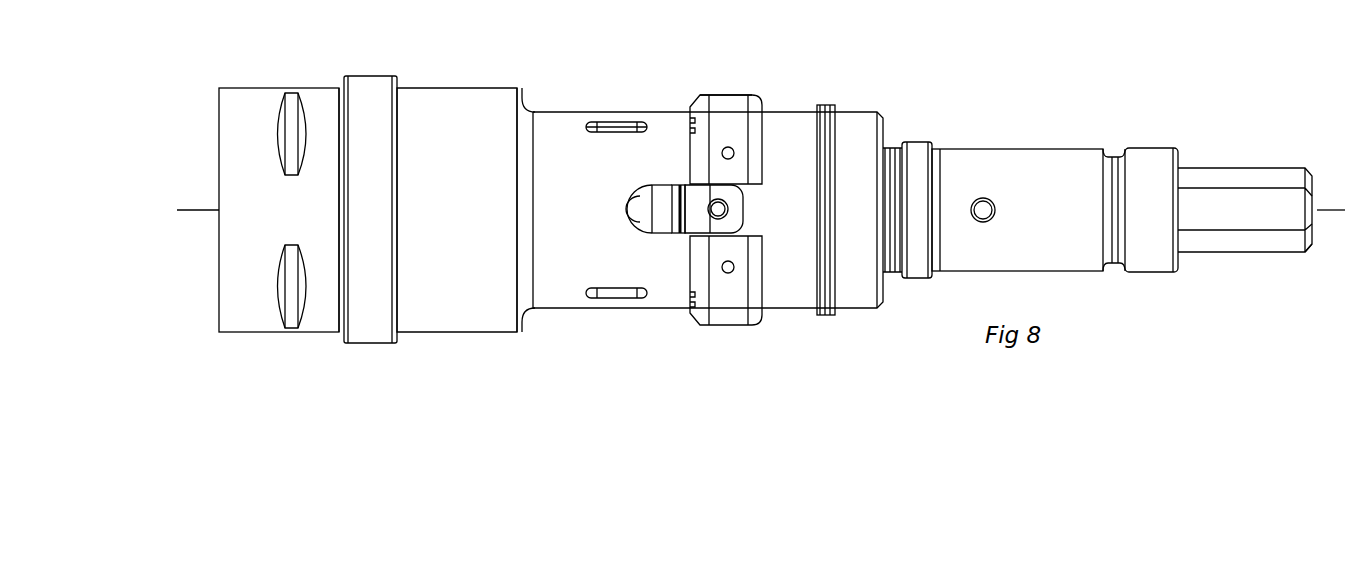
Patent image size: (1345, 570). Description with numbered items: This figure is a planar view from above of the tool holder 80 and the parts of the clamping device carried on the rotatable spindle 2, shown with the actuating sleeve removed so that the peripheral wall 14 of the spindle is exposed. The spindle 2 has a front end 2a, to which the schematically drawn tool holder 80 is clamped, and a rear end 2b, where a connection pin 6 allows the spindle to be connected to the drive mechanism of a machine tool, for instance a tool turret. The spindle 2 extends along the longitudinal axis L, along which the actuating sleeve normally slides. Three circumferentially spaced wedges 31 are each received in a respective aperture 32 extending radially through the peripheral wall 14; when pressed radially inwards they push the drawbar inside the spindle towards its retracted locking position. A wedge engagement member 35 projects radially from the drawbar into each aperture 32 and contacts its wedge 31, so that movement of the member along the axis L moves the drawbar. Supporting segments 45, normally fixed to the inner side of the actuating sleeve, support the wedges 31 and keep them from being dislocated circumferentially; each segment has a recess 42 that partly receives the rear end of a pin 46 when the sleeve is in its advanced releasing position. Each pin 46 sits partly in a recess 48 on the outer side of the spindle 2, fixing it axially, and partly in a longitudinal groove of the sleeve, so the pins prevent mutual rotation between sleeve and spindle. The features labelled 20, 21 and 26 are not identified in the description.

The spindle 2 is at (990, 157).
The front end of the spindle 2a is at (317, 403).
The rear end of the spindle 2b is at (1306, 272).
The connection pin 6 is at (1217, 245).
The peripheral wall 14 is at (573, 293).
The housing 20 is at (466, 166).
The housing shoulder 21 is at (530, 155).
The housing end face 26 is at (487, 167).
The wedge 31 is at (663, 217).
The aperture 32 is at (630, 212).
The wedge engagement member 35 is at (723, 195).
The recess in a supporting segment 42 is at (726, 47).
The supporting segment 45 is at (728, 102).
The pin 46 is at (616, 68).
The recess 48 is at (602, 127).
The tool holder 80 is at (250, 97).
The longitudinal axis L is at (747, 210).